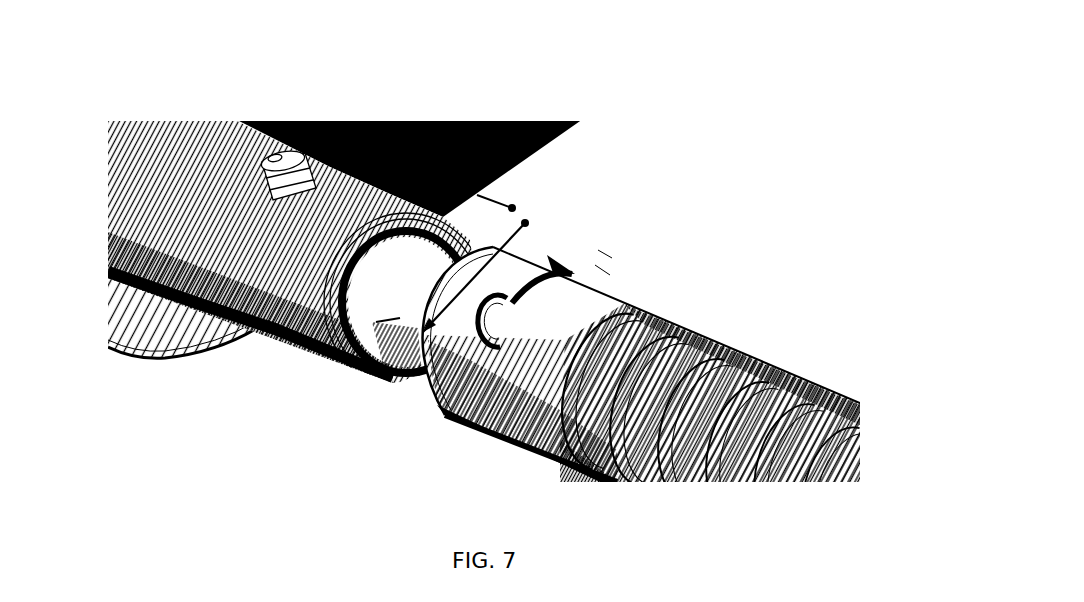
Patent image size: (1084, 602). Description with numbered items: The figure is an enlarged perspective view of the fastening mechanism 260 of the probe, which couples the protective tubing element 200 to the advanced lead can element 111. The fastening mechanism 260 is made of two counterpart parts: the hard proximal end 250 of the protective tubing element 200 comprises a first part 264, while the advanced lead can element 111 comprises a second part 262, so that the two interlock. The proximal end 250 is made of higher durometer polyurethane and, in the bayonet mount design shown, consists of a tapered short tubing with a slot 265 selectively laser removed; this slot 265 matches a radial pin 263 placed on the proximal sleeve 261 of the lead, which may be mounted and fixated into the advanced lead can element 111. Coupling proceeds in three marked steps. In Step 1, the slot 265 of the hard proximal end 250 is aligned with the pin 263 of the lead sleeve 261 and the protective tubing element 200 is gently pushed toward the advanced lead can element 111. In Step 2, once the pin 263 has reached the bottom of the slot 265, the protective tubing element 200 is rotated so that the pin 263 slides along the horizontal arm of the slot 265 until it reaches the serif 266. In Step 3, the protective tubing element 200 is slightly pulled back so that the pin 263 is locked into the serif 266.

The advanced lead can element 111 is at (160, 342).
The protective tubing element 200 is at (752, 352).
The proximal end 250 is at (505, 430).
The fastening mechanism 260 is at (605, 253).
The proximal sleeve 261 is at (300, 327).
The second part of the fastening mechanism 262 is at (215, 262).
The radial pin 263 is at (287, 167).
The first part of the fastening mechanism 264 is at (603, 270).
The slot 265 is at (573, 268).
The serif 266 is at (497, 338).
The Step 1 is at (489, 182).
The Step 2 is at (476, 275).
The Step 3 is at (388, 344).